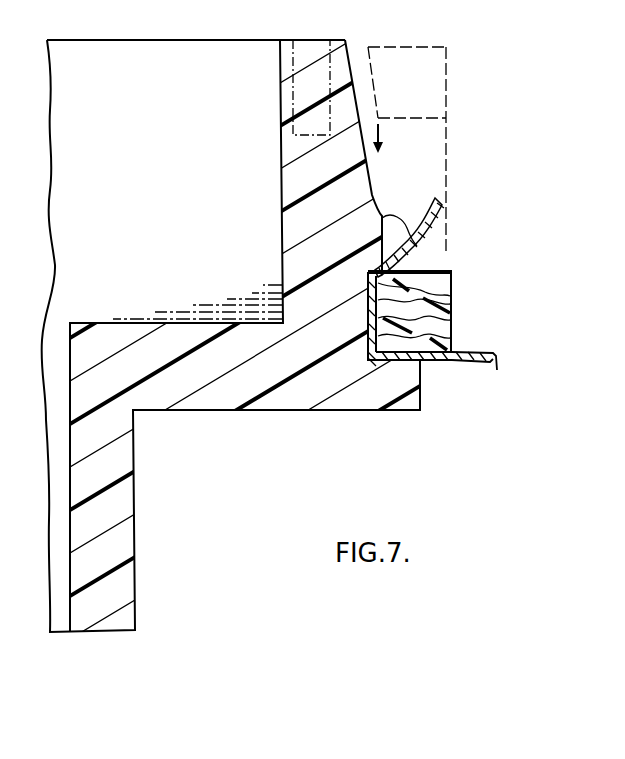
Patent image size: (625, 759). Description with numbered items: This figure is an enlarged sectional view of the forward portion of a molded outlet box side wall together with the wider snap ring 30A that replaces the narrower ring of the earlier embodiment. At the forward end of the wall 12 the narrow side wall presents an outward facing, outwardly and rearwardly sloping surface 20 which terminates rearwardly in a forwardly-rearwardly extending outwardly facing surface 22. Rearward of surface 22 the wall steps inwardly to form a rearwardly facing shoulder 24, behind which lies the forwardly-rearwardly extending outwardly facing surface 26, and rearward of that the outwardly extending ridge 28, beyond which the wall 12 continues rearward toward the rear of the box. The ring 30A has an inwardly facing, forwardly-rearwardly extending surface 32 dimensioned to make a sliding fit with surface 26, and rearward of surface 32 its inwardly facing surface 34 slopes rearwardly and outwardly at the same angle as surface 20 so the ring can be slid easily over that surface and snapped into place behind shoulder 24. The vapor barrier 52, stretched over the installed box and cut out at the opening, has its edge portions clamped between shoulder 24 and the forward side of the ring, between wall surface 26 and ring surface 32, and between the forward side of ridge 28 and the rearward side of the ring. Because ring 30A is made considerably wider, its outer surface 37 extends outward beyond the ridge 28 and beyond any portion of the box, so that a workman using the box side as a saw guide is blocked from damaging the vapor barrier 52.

The wall 12 is at (125, 503).
The outwardly and rearwardly sloping surface 20 is at (352, 48).
The outwardly facing surface 22 is at (418, 240).
The rearwardly facing shoulder 24 is at (453, 279).
The outwardly facing surface 26 is at (428, 358).
The outwardly extending ridge 28 is at (383, 393).
The ring 30A is at (452, 65).
The inwardly facing surface 32 is at (373, 62).
The inwardly facing surface 34 is at (378, 362).
The outer surface 37 is at (453, 292).
The vapor barrier 52 is at (468, 350).